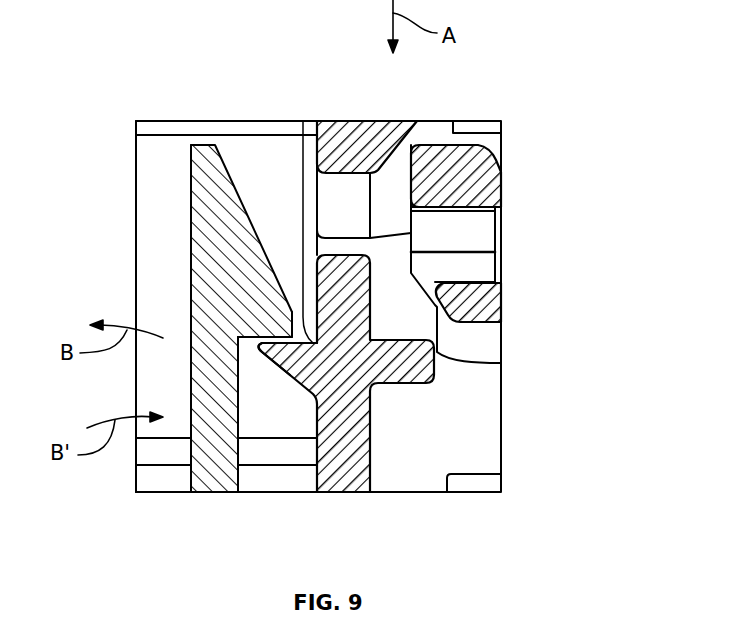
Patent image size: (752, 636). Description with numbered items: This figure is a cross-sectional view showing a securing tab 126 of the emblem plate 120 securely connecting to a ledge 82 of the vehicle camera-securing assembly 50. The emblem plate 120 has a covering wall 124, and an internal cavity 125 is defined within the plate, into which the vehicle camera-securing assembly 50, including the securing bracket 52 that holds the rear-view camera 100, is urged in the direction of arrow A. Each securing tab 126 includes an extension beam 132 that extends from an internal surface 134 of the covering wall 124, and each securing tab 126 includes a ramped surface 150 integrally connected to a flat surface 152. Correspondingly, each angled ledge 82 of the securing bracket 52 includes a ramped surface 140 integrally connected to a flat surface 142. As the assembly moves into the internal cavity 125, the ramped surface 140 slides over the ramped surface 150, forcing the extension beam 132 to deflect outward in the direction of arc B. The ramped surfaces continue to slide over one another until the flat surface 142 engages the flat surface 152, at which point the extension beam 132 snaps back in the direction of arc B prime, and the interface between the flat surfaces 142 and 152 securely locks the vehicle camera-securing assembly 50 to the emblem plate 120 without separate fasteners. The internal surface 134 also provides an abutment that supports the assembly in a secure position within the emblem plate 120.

The rear-view camera 100 is at (460, 458).
The emblem plate 120 is at (136, 177).
The covering wall 124 is at (148, 283).
The internal cavity 125 is at (268, 155).
The securing tab 126 is at (191, 360).
The extension beam 132 is at (191, 420).
The internal surface 134 is at (191, 205).
The ramped surface 140 is at (284, 375).
The flat surface 142 is at (303, 121).
The ramped surface 150 is at (247, 193).
The flat surface 152 is at (246, 338).
The vehicle camera-securing assembly 50 is at (374, 106).
The securing bracket 52 is at (403, 121).
The angled ledge 82 is at (262, 352).